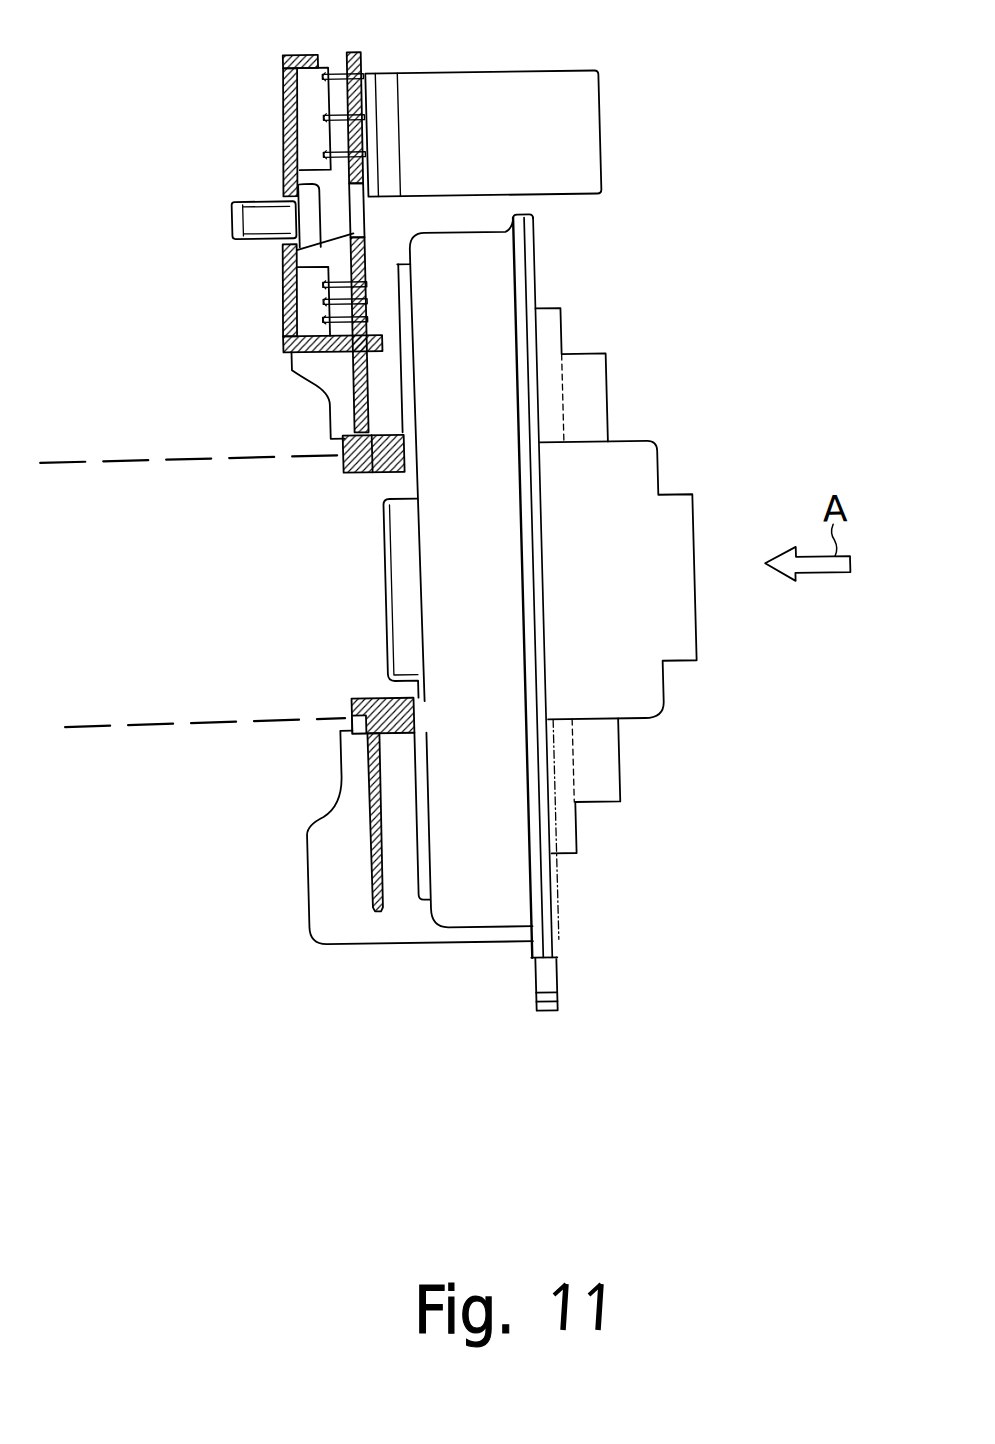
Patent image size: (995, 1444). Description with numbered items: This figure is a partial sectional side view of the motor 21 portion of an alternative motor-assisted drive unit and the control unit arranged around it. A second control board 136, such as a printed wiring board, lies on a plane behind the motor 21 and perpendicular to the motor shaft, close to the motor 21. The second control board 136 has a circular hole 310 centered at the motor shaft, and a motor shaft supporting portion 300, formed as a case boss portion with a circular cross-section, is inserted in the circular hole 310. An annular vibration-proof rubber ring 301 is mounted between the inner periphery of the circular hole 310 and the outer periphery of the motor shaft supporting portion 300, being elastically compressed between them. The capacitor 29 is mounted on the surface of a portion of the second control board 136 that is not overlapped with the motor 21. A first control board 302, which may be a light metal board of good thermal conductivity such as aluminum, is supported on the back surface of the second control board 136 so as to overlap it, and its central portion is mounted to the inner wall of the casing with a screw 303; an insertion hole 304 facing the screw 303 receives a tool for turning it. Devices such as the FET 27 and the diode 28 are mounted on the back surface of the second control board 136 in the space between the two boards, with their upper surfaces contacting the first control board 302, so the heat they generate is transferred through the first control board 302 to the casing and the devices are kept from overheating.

The motor 21 is at (505, 423).
The FET 27 is at (316, 95).
The diode 28 is at (302, 323).
The capacitor 29 is at (590, 107).
The second control board 136 is at (376, 58).
The motor shaft supporting portion 300 is at (390, 680).
The vibration-proof rubber ring 301 is at (375, 468).
The first control board 302 is at (296, 54).
The screw 303 is at (242, 211).
The insertion hole 304 is at (306, 245).
The circular hole 310 is at (167, 455).